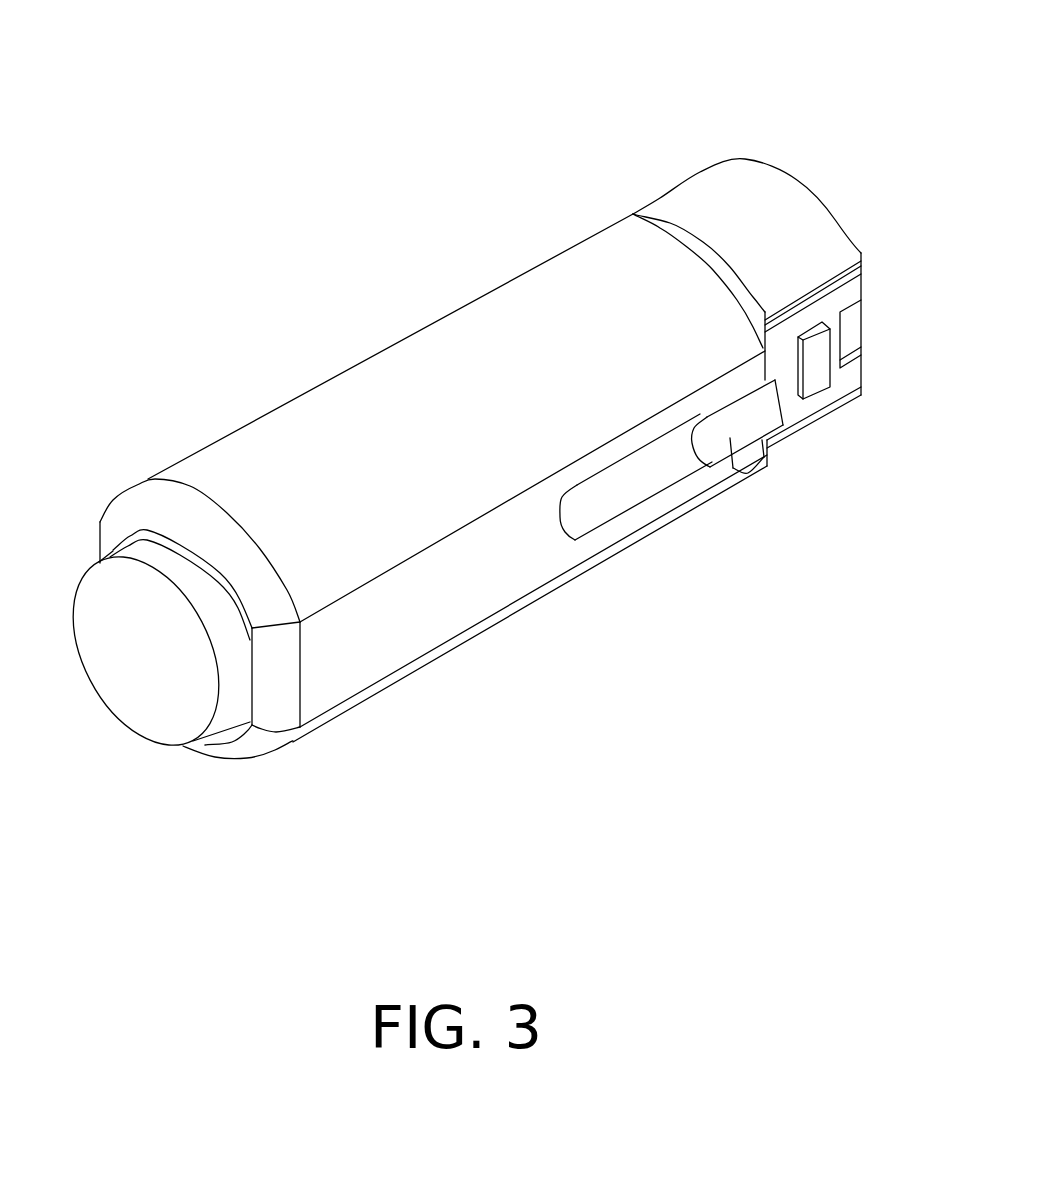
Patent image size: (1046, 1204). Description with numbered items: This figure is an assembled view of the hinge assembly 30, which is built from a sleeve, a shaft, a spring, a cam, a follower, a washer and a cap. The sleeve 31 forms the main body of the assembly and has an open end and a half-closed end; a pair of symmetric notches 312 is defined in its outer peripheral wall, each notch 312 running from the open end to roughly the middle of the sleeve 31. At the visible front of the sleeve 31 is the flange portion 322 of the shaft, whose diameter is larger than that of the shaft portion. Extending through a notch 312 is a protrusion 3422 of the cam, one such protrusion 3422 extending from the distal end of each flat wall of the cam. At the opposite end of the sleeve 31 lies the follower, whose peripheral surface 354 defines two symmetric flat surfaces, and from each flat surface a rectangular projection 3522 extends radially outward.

The hinge assembly 30 is at (481, 35).
The sleeve 31 is at (300, 420).
The notch 312 is at (602, 508).
The flange portion 322 is at (155, 708).
The protrusion 3422 is at (733, 442).
The peripheral surface 354 is at (740, 184).
The rectangular projection 3522 is at (820, 380).